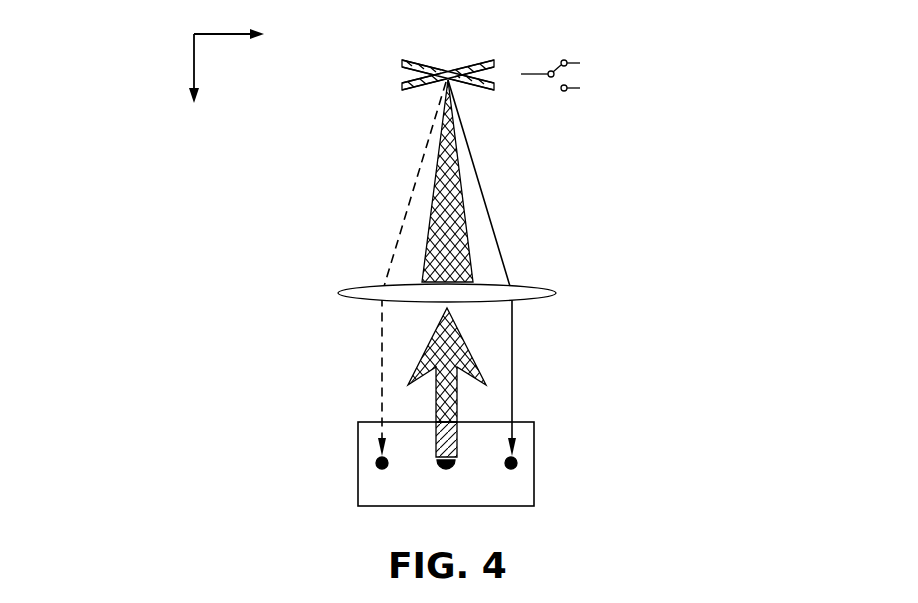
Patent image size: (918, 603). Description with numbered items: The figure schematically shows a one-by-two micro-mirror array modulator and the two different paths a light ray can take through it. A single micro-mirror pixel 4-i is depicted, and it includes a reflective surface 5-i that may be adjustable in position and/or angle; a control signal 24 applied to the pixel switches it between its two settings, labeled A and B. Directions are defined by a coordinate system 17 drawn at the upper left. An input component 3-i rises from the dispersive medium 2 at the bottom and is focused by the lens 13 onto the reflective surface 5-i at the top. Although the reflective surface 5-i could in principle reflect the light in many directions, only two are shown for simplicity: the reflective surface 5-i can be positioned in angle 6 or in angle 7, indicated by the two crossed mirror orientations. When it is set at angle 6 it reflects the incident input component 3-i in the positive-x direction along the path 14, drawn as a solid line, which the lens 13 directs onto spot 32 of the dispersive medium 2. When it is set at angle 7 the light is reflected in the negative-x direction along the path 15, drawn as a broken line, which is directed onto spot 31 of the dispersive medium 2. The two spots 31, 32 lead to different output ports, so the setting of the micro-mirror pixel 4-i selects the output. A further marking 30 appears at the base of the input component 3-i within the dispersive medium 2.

The coordinate system 17 is at (170, 18).
The angle 7 is at (412, 61).
The angle 6 is at (480, 61).
The control signal 24 is at (535, 71).
The reflective surface 5-i is at (610, 45).
The micro-mirror pixel 4-i is at (705, 5).
The path 14 is at (482, 186).
The path 15 is at (412, 187).
The lens 13 is at (556, 293).
The input component 3-i is at (468, 350).
The light source spot 30 is at (452, 467).
The dispersive medium 2 is at (534, 493).
The spot 31 is at (376, 463).
The spot 32 is at (517, 463).